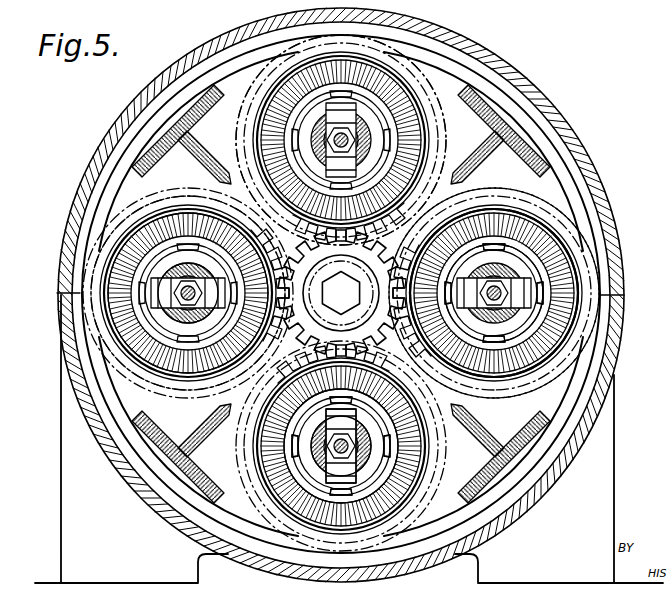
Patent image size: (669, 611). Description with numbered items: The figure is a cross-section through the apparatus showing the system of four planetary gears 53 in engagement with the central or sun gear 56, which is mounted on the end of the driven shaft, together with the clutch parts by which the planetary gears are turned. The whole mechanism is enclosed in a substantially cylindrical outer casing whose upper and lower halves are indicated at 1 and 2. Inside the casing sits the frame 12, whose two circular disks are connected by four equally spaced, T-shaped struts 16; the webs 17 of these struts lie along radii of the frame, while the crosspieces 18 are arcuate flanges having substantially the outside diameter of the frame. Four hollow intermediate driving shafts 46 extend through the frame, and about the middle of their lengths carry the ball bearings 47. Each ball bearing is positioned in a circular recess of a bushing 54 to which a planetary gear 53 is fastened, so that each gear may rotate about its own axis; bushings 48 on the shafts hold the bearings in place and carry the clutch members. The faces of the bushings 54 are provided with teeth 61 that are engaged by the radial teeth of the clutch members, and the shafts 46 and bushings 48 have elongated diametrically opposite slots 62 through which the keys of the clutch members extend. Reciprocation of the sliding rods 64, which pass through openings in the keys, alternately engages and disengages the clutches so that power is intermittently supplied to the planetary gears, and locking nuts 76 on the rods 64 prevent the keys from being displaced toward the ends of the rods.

The upper half of outer casing 1 is at (537, 90).
The lower half of outer casing 2 is at (593, 432).
The frame 12 is at (497, 160).
The struts 16 is at (545, 158).
The webs 17 is at (478, 150).
The crosspieces 18 is at (462, 96).
The hollow shafts 46 is at (372, 457).
The ball bearings 47 is at (566, 255).
The bushings 48 is at (540, 335).
The planetary gears 53 is at (410, 70).
The bushings 54 is at (575, 277).
The sun gear 56 is at (207, 392).
The teeth 61 is at (545, 322).
The slots 62 is at (300, 482).
The rods 64 is at (135, 315).
The locking nuts 76 is at (183, 312).